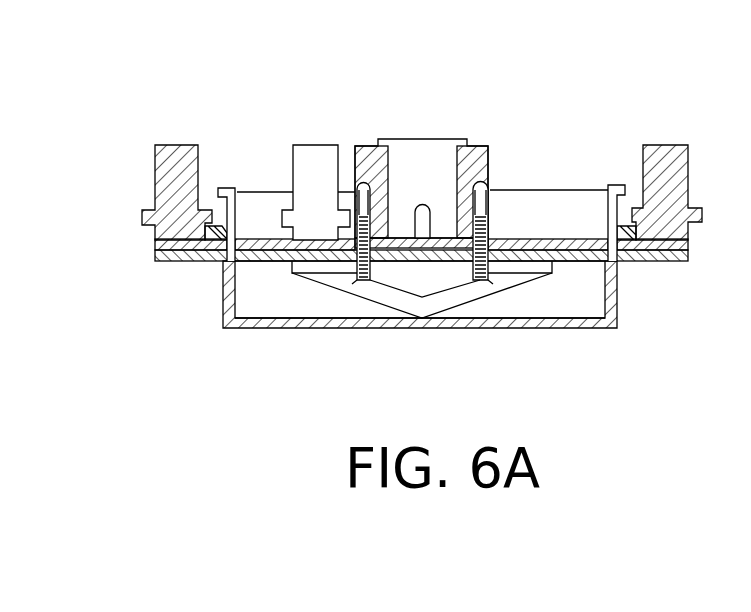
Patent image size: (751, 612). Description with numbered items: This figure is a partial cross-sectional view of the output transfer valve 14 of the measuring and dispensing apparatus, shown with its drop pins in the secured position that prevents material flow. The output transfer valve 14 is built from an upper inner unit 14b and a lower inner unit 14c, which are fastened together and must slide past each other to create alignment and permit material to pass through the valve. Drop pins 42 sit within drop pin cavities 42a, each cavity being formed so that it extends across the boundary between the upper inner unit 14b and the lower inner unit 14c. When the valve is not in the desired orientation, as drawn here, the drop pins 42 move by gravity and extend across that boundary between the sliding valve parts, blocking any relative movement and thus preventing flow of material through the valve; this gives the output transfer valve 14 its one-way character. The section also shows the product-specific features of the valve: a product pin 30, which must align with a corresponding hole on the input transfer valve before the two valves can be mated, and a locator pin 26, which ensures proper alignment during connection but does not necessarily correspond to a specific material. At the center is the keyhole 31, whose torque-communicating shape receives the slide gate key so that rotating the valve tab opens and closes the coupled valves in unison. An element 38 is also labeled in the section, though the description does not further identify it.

The output transfer valve 14 is at (253, 352).
The upper inner unit 14b is at (573, 329).
The lower inner unit 14c is at (492, 189).
The locator pin 26 is at (172, 145).
The product pin 30 is at (312, 145).
The keyhole 31 is at (423, 147).
The retaining bracket 38 is at (230, 186).
The drop pin 42 is at (478, 284).
The drop pin cavity 42a is at (363, 183).